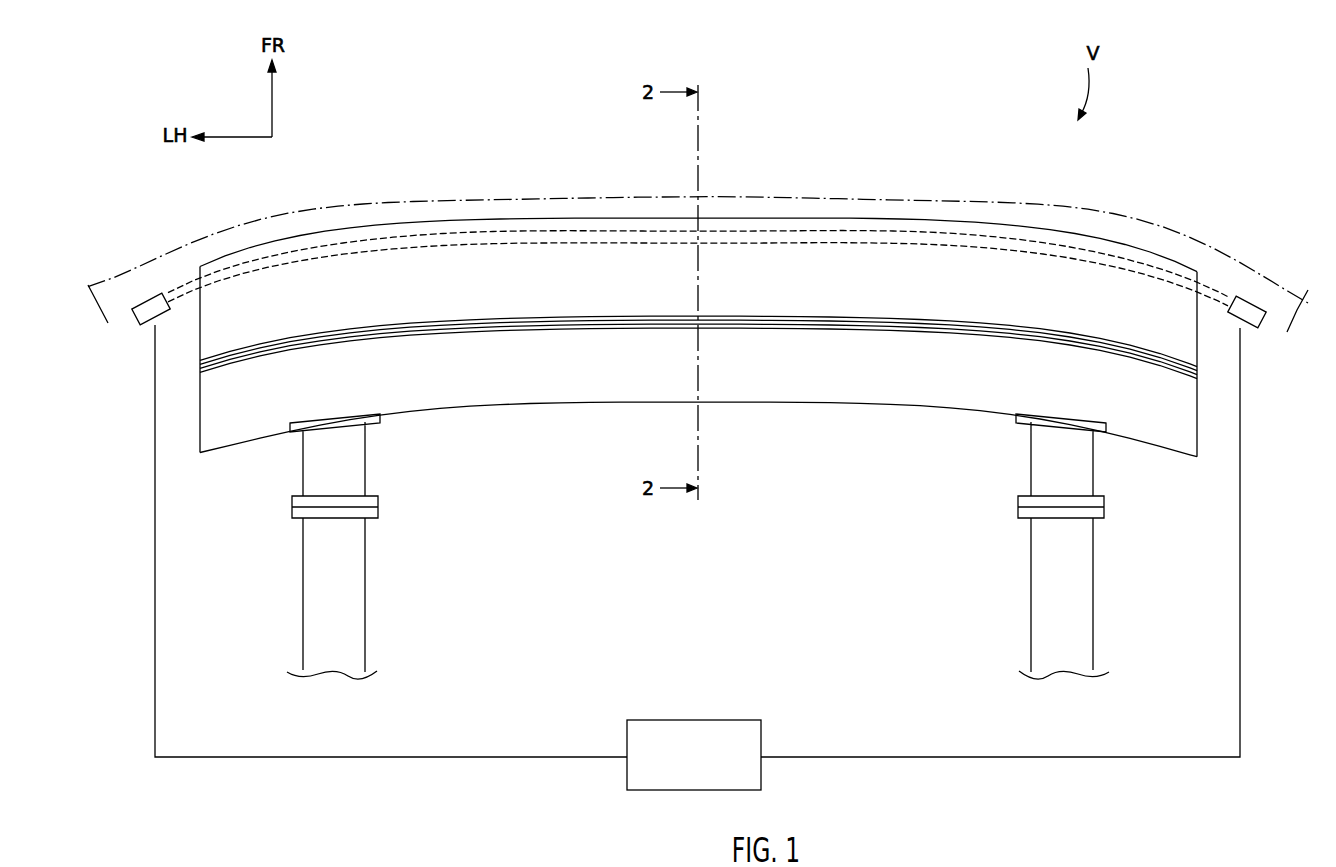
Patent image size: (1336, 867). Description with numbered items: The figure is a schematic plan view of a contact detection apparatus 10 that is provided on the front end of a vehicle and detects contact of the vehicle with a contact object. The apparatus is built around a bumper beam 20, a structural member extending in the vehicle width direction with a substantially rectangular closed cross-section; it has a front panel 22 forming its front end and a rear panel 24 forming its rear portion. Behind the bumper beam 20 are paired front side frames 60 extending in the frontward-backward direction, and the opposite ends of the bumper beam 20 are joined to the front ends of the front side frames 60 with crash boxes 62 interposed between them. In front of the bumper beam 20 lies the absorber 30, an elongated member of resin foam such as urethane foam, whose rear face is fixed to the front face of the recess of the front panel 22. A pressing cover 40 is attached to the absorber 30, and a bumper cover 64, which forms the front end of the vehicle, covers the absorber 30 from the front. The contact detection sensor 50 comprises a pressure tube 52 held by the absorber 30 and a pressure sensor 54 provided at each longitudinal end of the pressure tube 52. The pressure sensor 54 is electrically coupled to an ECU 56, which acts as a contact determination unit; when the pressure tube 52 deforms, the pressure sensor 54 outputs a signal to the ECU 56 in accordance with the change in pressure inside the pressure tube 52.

The contact detection apparatus 10 is at (1005, 148).
The bumper beam 20 is at (775, 403).
The front panel 22 is at (828, 317).
The rear panel 24 is at (868, 405).
The absorber 30 is at (538, 268).
The pressing cover 40 is at (440, 220).
The contact detection sensor 50 is at (701, 464).
The pressure tube 52 is at (180, 288).
The pressure sensor 54 is at (145, 327).
The ECU 56 is at (697, 720).
The front side frame 60 is at (365, 610).
The crash box 62 is at (365, 462).
The bumper cover 64 is at (900, 197).